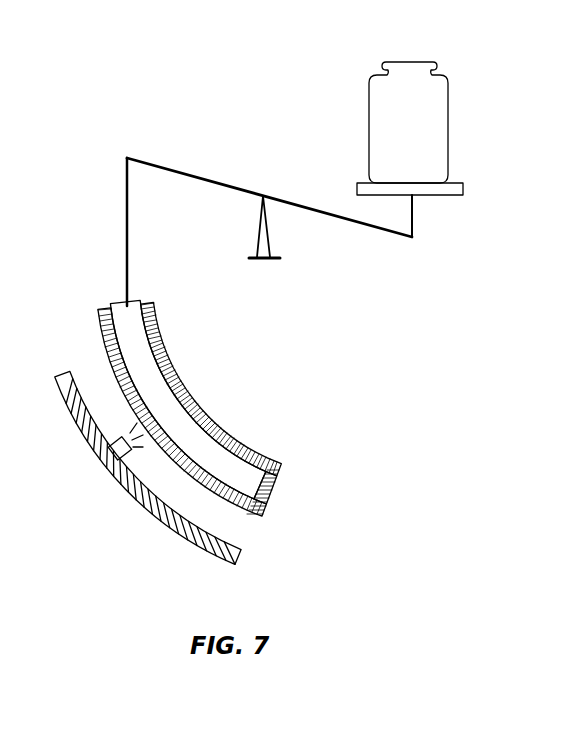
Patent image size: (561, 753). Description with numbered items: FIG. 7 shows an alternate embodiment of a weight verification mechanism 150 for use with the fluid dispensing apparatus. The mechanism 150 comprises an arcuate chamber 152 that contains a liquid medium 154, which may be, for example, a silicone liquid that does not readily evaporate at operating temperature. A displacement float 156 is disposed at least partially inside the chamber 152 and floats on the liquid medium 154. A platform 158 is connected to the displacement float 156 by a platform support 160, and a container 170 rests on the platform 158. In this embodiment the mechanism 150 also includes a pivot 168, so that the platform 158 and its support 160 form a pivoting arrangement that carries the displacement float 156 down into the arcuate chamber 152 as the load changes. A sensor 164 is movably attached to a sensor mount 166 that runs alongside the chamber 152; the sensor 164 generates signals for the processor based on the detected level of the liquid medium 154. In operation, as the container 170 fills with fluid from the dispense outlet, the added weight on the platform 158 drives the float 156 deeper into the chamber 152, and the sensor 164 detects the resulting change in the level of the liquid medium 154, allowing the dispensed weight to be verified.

The weight verification mechanism 150 is at (169, 99).
The chamber 152 is at (171, 362).
The liquid medium 154 is at (281, 465).
The displacement float 156 is at (173, 412).
The platform 158 is at (458, 187).
The platform support 160 is at (126, 192).
The sensor 164 is at (112, 442).
The sensor mount 166 is at (168, 520).
The pivot 168 is at (272, 248).
The container 170 is at (365, 125).